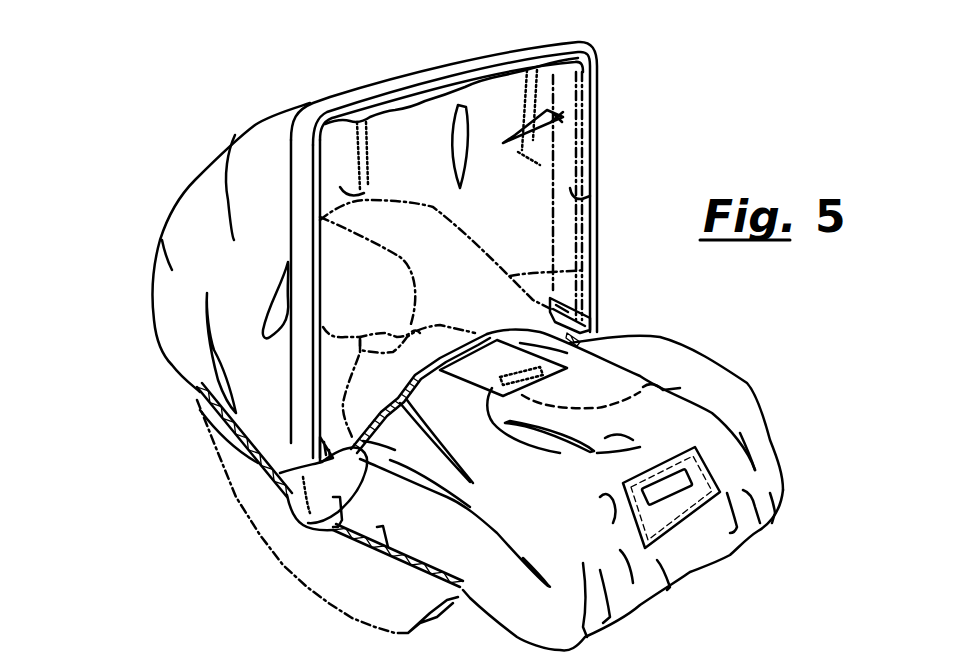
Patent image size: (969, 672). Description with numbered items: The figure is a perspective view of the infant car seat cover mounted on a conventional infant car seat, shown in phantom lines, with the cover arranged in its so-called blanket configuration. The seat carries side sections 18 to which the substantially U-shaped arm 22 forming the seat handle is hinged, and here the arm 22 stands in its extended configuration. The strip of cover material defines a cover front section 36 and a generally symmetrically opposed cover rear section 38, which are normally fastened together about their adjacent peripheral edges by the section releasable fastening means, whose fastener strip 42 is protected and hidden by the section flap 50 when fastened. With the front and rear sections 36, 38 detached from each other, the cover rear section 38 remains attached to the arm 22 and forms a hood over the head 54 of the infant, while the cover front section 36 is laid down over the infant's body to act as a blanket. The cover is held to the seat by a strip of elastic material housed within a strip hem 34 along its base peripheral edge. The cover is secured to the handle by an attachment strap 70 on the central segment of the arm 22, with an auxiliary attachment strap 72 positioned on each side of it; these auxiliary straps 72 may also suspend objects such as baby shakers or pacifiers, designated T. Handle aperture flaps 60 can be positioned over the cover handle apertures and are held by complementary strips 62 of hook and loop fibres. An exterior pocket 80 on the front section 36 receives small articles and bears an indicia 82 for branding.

The side sections 18 is at (336, 574).
The arm 22 is at (433, 60).
The strip hem 34 is at (247, 449).
The cover front section 36 is at (682, 334).
The cover rear section 38 is at (182, 237).
The fastener strip 42 is at (397, 420).
The section flap 50 is at (527, 50).
The head 54 is at (433, 278).
The handle aperture flaps 60 is at (613, 445).
The complementary strips 62 is at (640, 392).
The attachment strap 70 is at (477, 67).
The auxiliary attachment straps 72 is at (373, 113).
The exterior pocket 80 is at (685, 520).
The indicia 82 is at (722, 505).
The toys T is at (302, 127).